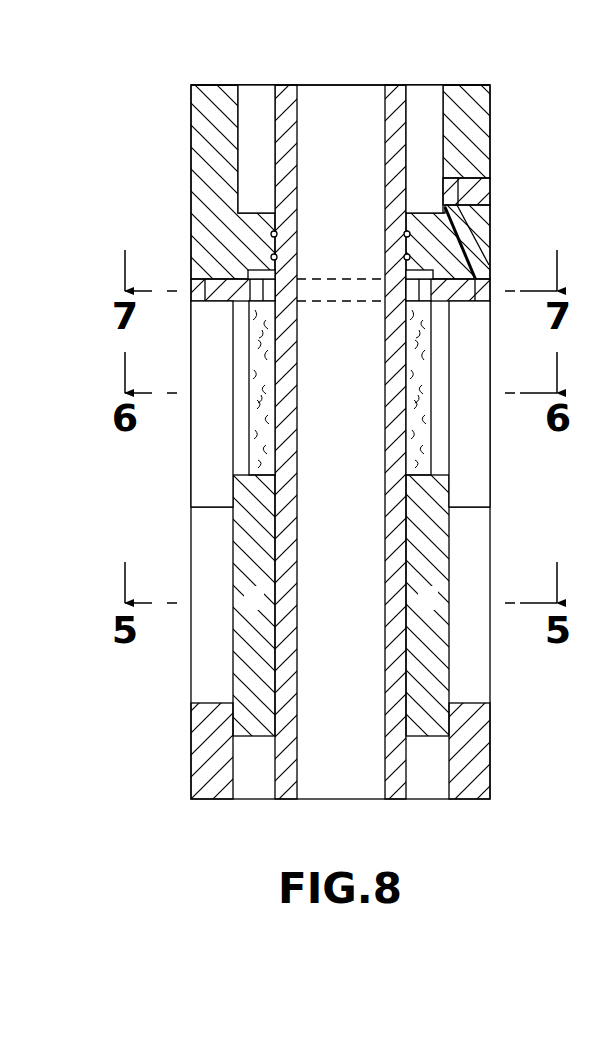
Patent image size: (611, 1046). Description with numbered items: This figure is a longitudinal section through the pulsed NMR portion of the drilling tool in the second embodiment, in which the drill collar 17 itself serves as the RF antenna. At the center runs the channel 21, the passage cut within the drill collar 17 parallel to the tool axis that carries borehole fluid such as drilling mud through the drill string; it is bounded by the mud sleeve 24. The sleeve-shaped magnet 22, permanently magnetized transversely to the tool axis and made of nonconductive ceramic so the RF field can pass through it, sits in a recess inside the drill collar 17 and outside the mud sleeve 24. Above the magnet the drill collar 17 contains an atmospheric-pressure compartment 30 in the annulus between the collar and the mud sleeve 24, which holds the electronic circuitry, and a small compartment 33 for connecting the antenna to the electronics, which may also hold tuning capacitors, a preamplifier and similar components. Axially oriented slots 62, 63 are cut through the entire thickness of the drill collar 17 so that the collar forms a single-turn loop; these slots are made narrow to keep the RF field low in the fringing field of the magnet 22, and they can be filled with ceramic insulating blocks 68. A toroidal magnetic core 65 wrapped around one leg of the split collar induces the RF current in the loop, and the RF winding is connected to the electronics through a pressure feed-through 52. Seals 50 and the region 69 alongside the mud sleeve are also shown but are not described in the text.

The drill collar 17 is at (198, 120).
The channel 21 is at (316, 90).
The magnet 22 is at (443, 653).
The mud sleeve 24 is at (290, 186).
The compartment 30 is at (248, 202).
The small compartment 33 is at (455, 195).
The seal rings 50 is at (270, 233).
The pressure feed-through 52 is at (480, 238).
The slot 62 is at (448, 375).
The slot 63 is at (208, 358).
The toroidal magnetic core 65 is at (192, 289).
The ceramic insulating blocks 68 is at (200, 559).
The channel 69 is at (249, 398).